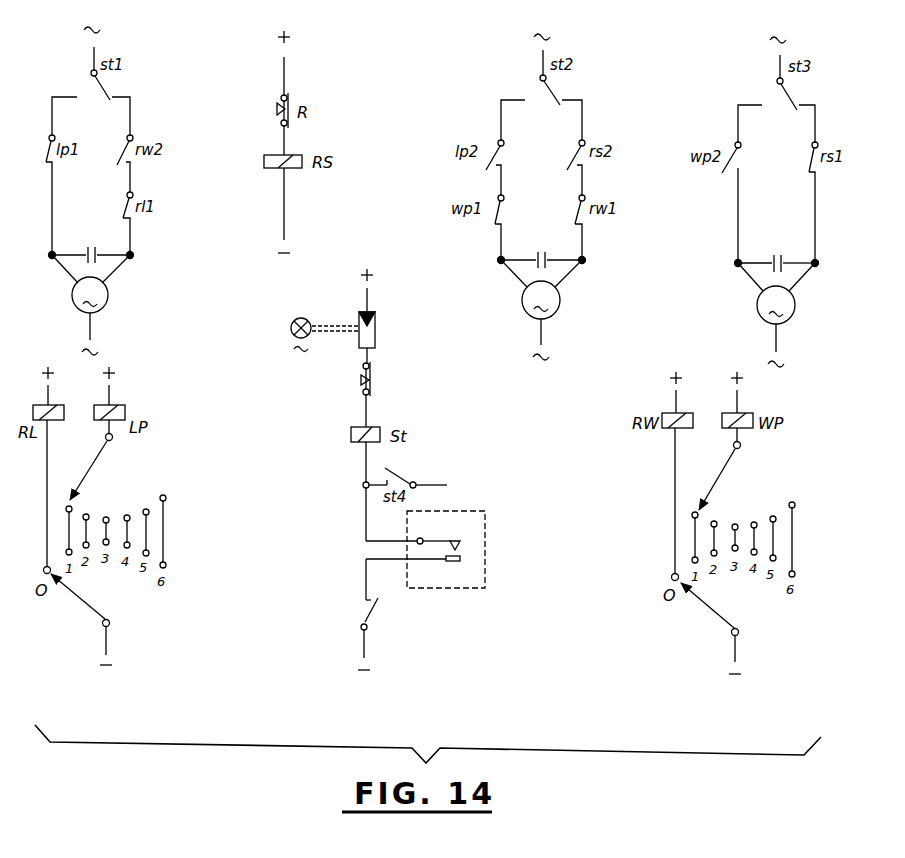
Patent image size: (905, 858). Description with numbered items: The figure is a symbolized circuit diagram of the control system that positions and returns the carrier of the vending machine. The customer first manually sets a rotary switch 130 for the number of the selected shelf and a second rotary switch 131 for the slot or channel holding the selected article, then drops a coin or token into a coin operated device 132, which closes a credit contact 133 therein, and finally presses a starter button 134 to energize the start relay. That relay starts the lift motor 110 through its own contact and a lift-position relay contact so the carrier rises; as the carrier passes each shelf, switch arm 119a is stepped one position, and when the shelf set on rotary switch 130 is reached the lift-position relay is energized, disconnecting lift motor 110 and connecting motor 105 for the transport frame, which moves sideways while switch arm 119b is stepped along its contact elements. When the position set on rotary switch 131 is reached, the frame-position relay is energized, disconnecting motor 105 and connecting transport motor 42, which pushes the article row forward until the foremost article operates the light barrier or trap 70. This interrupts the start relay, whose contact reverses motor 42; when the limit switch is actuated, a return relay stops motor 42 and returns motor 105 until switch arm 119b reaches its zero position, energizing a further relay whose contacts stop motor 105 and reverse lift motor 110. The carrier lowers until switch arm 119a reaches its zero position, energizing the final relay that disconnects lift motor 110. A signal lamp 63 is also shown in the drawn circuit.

The lift motor 110 is at (106, 303).
The transport frame motor 105 is at (557, 310).
The transport motor 42 is at (792, 314).
The signal lamp 63 is at (301, 318).
The light barrier or trap 70 is at (383, 379).
The rotary switch 130 is at (109, 445).
The rotary switch 131 is at (737, 452).
The coin operated device 132 is at (472, 549).
The credit contact 133 is at (458, 548).
The starter button 134 is at (366, 627).
The switch arm 119a is at (108, 623).
The switch arm 119b is at (737, 632).